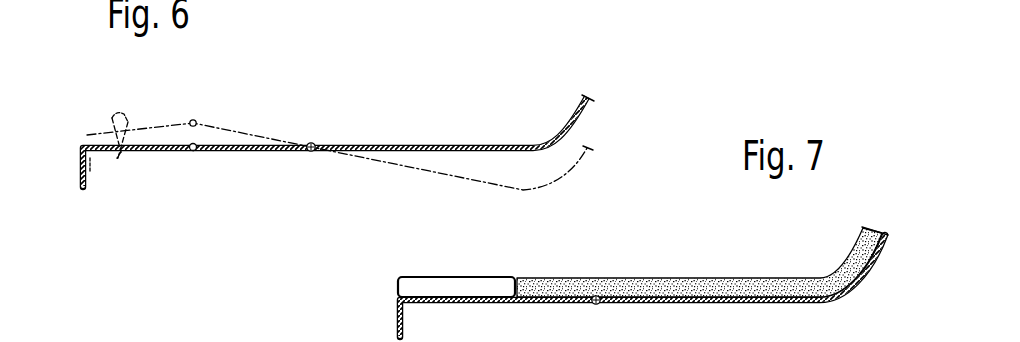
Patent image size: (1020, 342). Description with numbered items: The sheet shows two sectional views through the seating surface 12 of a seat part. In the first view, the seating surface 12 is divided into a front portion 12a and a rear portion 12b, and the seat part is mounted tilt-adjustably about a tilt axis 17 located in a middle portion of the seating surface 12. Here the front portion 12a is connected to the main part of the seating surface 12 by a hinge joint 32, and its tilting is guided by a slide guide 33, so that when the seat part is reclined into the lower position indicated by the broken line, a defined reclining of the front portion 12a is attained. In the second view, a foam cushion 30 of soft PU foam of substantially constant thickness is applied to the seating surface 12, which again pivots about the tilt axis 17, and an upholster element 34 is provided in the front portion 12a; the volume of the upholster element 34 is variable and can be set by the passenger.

In FIG. 6, the seating surface 12 is at (338, 133).
In FIG. 6, the front portion 12a is at (157, 145).
In FIG. 6, the rear portion 12b is at (437, 146).
In FIG. 6, the tilt axis 17 is at (313, 143).
In FIG. 7, the tilt axis 17 is at (598, 305).
In FIG. 6, the hinge joint 32 is at (196, 144).
In FIG. 6, the slide guide 33 is at (113, 128).
In FIG. 7, the upholster element 34 is at (460, 277).
In FIG. 7, the foam cushion 30 is at (725, 283).